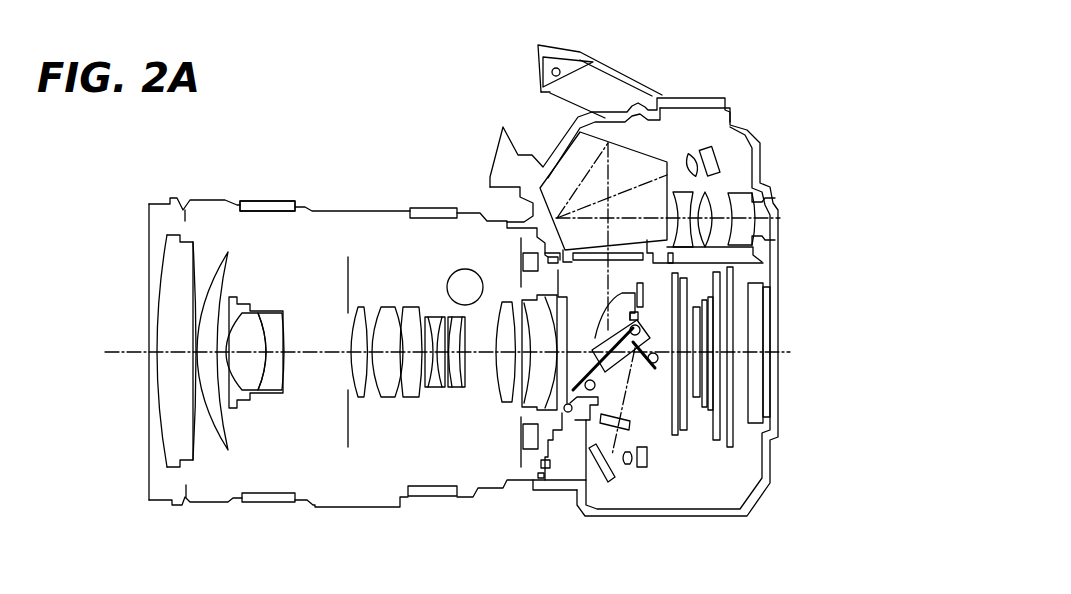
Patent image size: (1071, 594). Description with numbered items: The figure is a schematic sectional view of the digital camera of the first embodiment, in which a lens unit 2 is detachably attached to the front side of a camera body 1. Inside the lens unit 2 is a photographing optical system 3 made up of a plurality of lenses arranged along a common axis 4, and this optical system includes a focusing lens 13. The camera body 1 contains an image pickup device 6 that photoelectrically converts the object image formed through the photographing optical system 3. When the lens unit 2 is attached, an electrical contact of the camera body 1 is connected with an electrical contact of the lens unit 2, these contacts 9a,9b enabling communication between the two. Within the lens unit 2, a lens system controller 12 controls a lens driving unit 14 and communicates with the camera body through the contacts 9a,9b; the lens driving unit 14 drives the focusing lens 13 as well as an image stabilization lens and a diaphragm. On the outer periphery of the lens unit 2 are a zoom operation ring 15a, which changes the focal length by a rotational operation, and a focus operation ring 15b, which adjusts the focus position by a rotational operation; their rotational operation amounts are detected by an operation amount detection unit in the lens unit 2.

The camera body 1 is at (747, 92).
The lens unit 2 is at (170, 187).
The photographing optical system 3 is at (297, 455).
The optical axis 4 is at (120, 354).
The image pickup device 6 is at (710, 388).
The electrical contacts 9a,9b is at (533, 468).
The lens system controller 12 is at (514, 445).
The focusing lens 13 is at (436, 405).
The lens driving unit 14 is at (452, 275).
The zoom operation ring 15a is at (431, 208).
The focus operation ring 15b is at (277, 201).